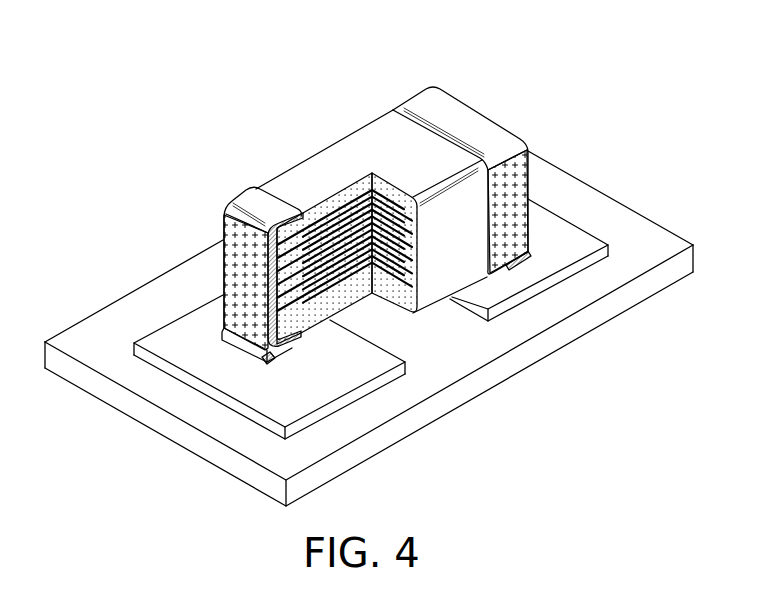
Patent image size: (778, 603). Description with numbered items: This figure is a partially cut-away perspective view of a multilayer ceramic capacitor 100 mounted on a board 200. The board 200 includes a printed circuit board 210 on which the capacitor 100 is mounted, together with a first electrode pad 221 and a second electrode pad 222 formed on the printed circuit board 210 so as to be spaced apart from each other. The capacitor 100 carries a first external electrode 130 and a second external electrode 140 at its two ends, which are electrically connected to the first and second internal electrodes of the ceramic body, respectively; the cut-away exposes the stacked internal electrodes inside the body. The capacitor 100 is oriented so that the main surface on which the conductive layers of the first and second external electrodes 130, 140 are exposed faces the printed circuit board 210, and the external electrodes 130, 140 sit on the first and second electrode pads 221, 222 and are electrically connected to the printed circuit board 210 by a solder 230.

The multilayer ceramic capacitor 100 is at (350, 194).
The first external electrode 130 is at (247, 193).
The second external electrode 140 is at (419, 96).
The board 200 is at (369, 337).
The printed circuit board 210 is at (463, 365).
The first electrode pad 221 is at (340, 380).
The second electrode pad 222 is at (557, 255).
The solder 230 is at (270, 363).